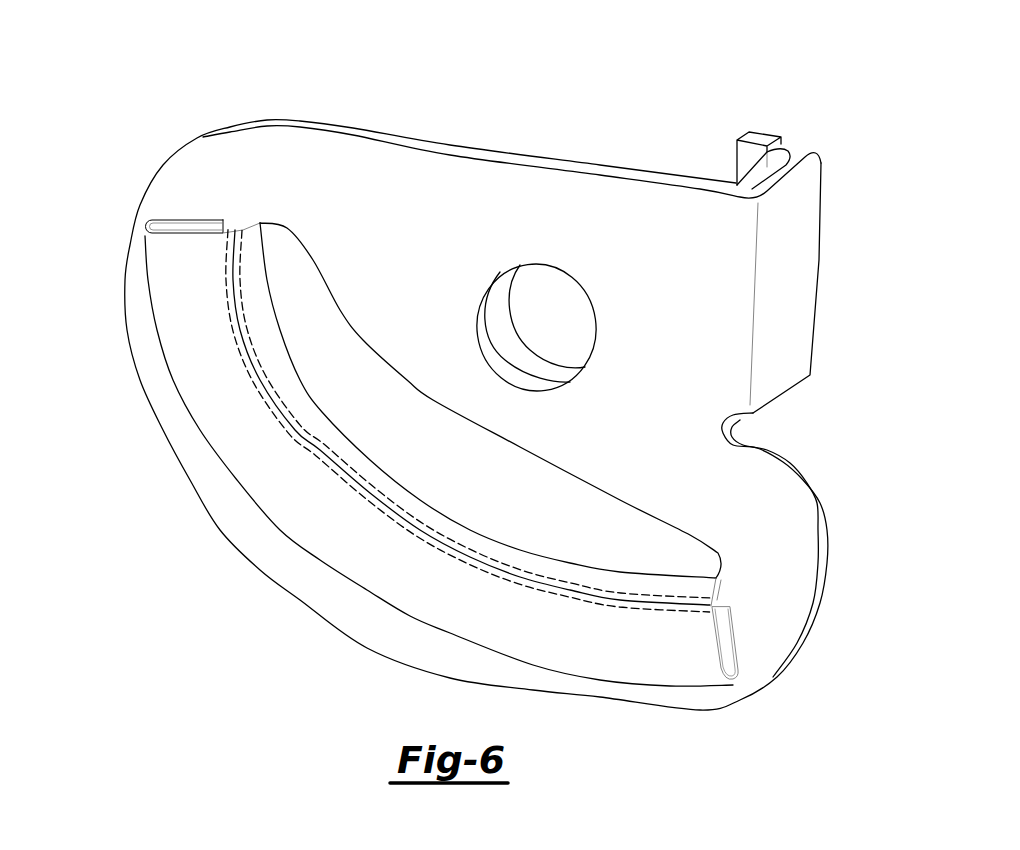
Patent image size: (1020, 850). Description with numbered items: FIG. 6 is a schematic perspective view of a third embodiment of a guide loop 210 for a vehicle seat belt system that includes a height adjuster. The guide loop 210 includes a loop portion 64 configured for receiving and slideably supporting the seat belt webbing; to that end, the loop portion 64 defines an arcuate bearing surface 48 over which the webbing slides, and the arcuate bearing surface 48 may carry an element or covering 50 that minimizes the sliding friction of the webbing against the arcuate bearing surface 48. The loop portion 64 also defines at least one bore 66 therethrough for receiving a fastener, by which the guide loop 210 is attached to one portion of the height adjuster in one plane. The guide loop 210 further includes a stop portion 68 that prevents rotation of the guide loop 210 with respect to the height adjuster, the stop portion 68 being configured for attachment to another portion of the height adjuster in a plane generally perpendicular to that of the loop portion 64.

The guide loop 210 is at (645, 122).
The loop portion 64 is at (413, 168).
The stop portion 68 is at (797, 255).
The bore 66 is at (481, 305).
The arcuate bearing surface 48 is at (520, 572).
The covering 50 is at (648, 657).